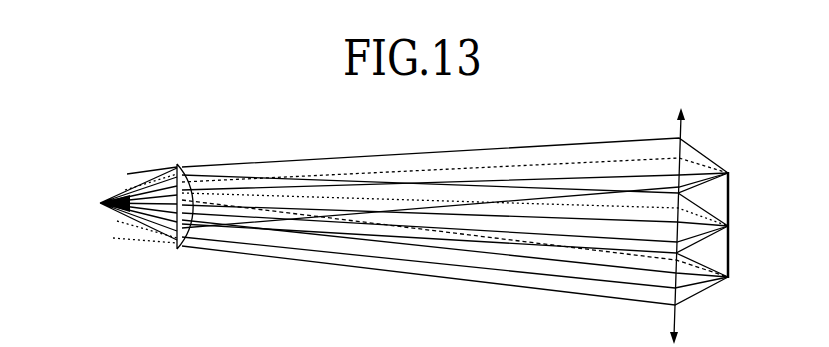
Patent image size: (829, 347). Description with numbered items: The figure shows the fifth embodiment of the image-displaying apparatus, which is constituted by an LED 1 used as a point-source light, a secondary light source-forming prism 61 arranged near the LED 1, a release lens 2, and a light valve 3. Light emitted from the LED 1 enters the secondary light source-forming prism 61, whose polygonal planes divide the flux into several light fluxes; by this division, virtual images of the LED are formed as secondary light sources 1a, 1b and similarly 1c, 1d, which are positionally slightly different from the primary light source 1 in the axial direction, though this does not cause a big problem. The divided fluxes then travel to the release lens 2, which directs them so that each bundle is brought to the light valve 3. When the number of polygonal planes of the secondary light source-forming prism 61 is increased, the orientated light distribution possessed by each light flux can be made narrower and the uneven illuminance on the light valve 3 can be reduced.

The LED 1 is at (100, 205).
The secondary light source 1a is at (129, 174).
The secondary light source 1b is at (124, 190).
The light ray 1c is at (116, 222).
The light ray 1d is at (116, 239).
The secondary light source-forming prism 61 is at (178, 164).
The release lens 2 is at (683, 125).
The light valve 3 is at (731, 247).